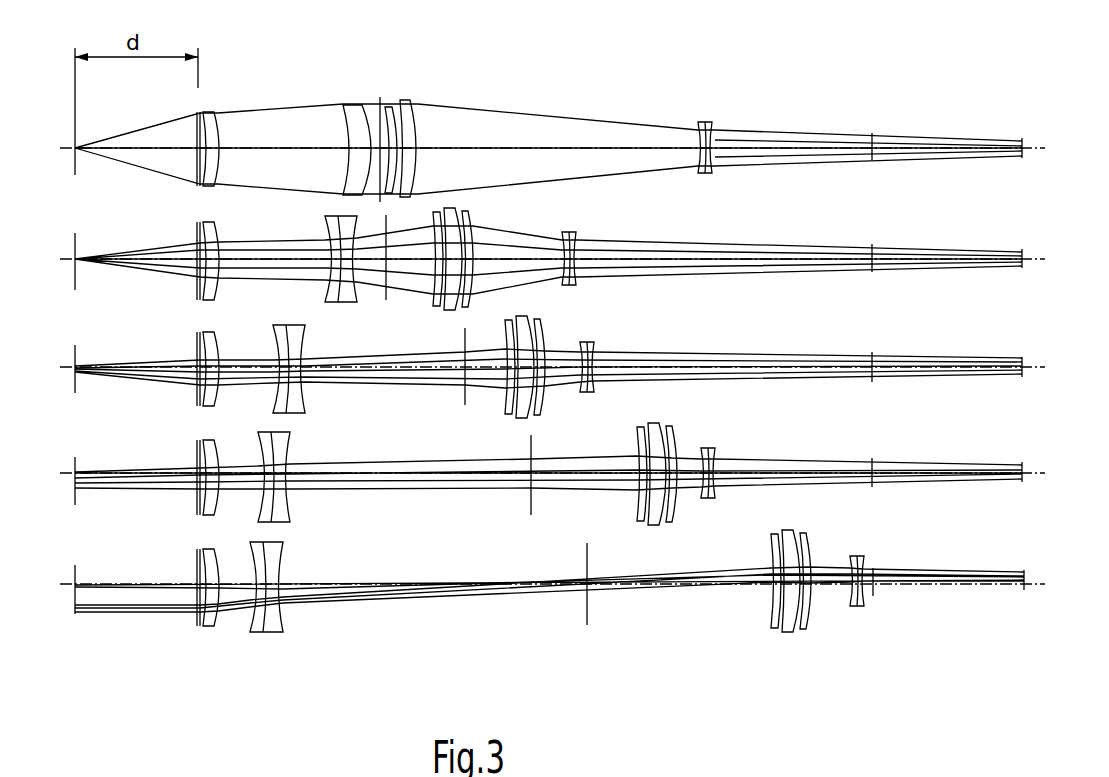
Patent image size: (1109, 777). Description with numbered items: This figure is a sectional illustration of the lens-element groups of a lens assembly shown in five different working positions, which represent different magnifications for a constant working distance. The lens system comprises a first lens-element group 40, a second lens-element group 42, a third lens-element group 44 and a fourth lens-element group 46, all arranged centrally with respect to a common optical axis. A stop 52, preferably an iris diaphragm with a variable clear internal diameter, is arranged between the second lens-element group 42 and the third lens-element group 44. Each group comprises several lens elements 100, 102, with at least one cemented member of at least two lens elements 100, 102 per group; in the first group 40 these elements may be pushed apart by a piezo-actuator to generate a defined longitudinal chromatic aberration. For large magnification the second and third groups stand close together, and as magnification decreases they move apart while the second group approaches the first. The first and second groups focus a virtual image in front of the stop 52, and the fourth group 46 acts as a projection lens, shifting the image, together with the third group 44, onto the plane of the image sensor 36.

The lens element 100 is at (345, 104).
The lens element 102 is at (372, 104).
The first lens-element group 40 is at (210, 640).
The second lens-element group 42 is at (285, 640).
The stop 52 is at (588, 608).
The third lens-element group 44 is at (792, 640).
The fourth lens-element group 46 is at (872, 613).
The image sensor 36 is at (1027, 585).